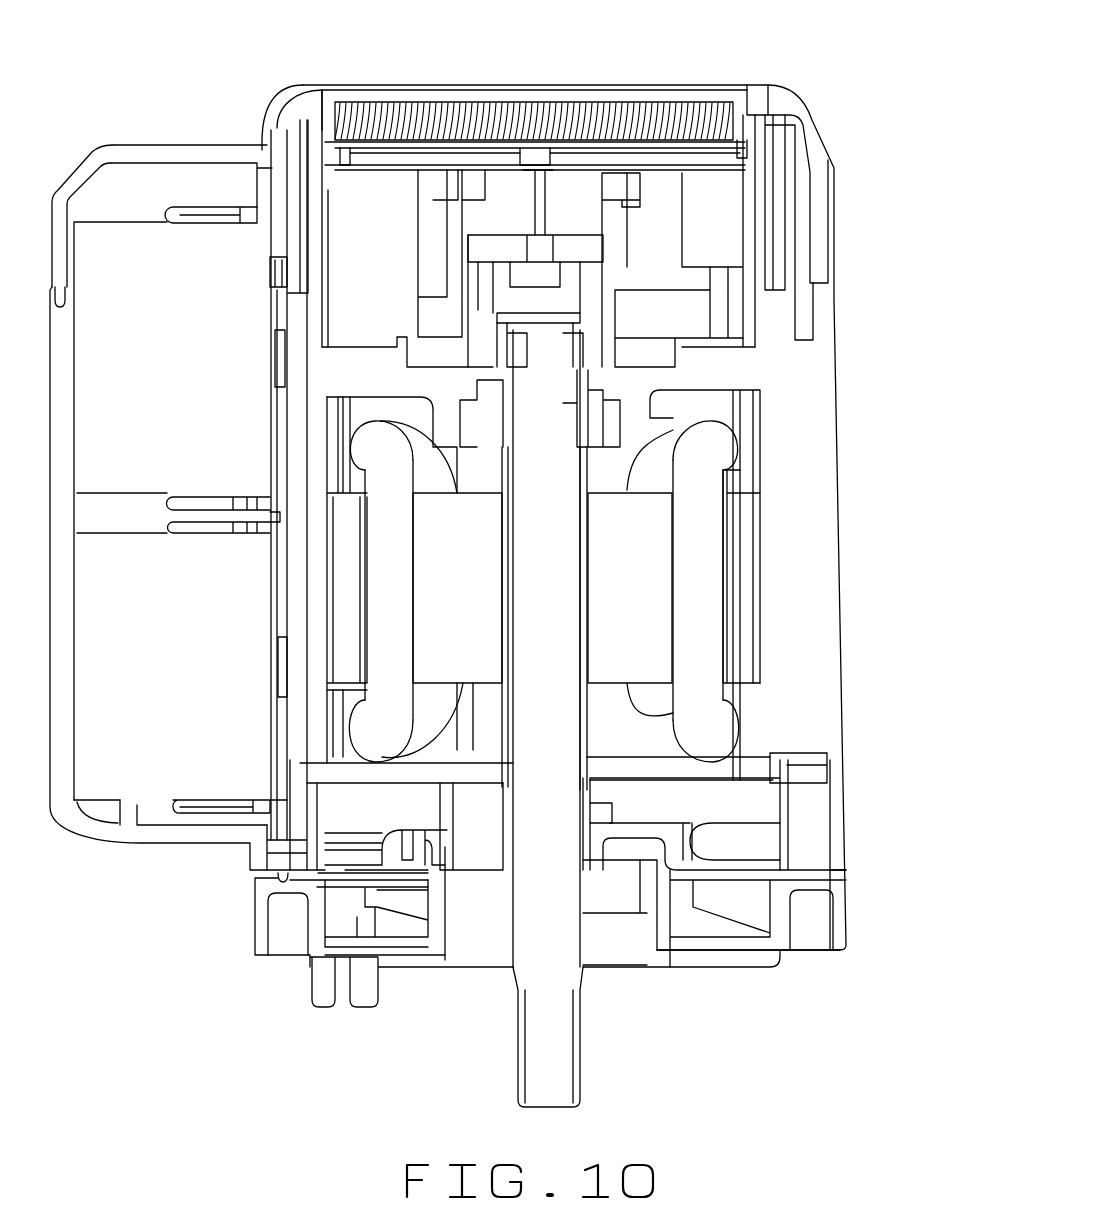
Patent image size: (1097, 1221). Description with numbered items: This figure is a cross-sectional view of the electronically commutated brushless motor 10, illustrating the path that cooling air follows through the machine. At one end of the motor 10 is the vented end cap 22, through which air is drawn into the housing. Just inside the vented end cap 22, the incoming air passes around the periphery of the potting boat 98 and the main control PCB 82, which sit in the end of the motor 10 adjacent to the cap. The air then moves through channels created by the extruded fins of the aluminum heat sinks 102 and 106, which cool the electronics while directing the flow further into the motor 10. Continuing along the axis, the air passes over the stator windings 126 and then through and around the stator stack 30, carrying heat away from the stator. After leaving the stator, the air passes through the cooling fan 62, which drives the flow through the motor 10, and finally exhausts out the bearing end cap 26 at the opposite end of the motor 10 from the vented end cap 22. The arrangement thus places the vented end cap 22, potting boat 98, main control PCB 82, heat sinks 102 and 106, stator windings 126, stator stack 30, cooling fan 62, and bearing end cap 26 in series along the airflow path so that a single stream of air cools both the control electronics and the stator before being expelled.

The motor 10 is at (448, 517).
The vented end cap 22 is at (717, 93).
The potting boat 98 is at (730, 155).
The aluminum heat sink 106 is at (437, 320).
The main control PCB 82 is at (692, 172).
The aluminum heat sink 102 is at (685, 311).
The stator stack 30 is at (450, 640).
The stator windings 126 is at (370, 747).
The cooling fan 62 is at (743, 845).
The bearing end cap 26 is at (657, 913).